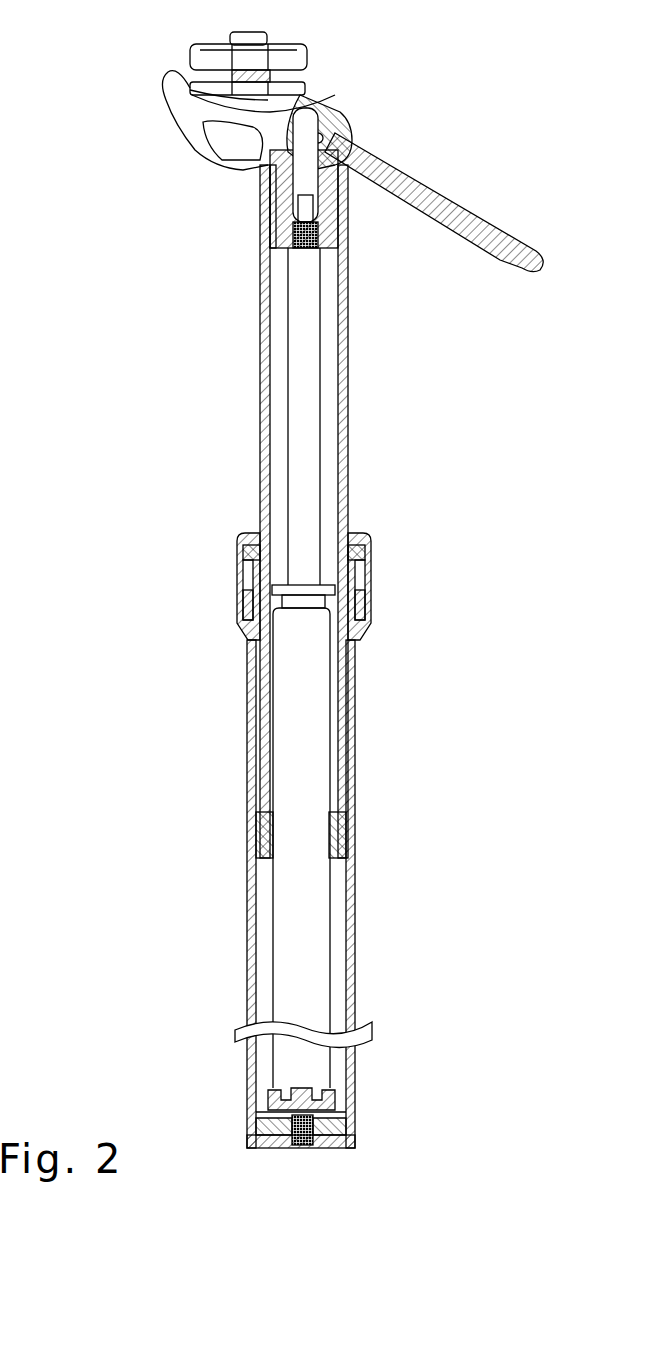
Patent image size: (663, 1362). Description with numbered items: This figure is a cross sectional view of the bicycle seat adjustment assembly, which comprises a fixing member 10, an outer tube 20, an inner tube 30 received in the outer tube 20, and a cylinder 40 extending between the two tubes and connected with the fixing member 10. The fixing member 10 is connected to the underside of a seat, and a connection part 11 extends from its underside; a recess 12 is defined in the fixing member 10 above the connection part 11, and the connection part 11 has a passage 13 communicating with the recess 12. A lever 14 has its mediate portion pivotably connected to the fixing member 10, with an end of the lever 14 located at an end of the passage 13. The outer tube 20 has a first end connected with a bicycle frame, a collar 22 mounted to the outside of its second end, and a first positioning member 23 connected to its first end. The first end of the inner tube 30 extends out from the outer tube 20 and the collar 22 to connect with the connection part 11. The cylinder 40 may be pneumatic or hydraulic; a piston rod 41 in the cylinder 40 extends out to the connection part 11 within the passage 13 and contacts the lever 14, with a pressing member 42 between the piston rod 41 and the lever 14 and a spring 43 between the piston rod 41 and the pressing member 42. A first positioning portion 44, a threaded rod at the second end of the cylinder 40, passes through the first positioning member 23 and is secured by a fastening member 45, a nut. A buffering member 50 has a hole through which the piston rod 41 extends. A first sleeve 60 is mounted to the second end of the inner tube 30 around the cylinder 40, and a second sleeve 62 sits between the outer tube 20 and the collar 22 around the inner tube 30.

The fixing member 10 is at (122, 68).
The connection part 11 is at (352, 238).
The recess 12 is at (268, 158).
The passage 13 is at (268, 203).
The lever 14 is at (443, 193).
The outer tube 20 is at (250, 965).
The collar 22 is at (372, 548).
The first positioning member 23 is at (333, 1105).
The inner tube 30 is at (262, 358).
The cylinder 40 is at (308, 995).
The piston rod 41 is at (310, 427).
The pressing member 42 is at (335, 125).
The spring 43 is at (352, 215).
The first positioning portion 44 is at (302, 1148).
The fastening member 45 is at (272, 1140).
The buffering member 50 is at (242, 600).
The first sleeve 60 is at (250, 848).
The second sleeve 62 is at (240, 548).